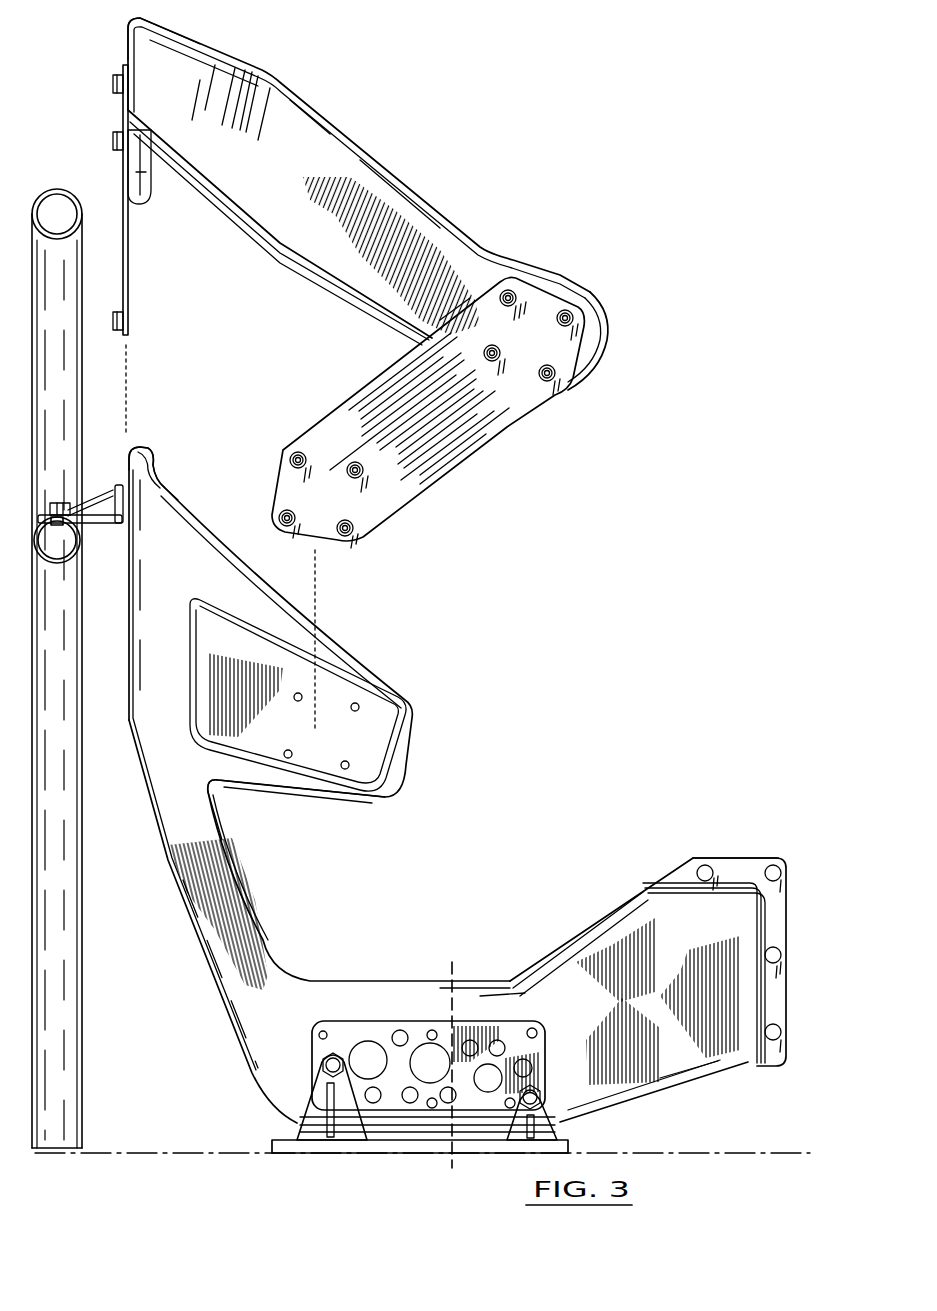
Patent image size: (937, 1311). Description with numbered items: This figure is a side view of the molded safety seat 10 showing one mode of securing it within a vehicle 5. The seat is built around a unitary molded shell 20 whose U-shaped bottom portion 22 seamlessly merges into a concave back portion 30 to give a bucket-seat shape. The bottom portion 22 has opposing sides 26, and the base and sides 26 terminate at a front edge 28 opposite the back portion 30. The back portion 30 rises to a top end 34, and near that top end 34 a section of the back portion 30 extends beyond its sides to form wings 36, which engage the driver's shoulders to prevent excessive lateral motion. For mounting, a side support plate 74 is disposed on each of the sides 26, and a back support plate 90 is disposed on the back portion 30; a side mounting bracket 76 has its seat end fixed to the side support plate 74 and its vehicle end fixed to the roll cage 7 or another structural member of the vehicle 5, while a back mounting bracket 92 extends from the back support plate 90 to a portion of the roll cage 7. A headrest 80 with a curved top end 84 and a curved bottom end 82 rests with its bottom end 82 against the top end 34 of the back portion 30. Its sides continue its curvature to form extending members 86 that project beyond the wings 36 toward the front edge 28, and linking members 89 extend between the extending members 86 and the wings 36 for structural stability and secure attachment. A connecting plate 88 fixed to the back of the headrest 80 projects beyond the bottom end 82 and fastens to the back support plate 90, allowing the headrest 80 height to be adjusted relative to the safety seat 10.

The vehicle 5 is at (452, 968).
The roll cage 7 is at (84, 262).
The safety seat 10 is at (566, 636).
The unitary molded shell 20 is at (311, 768).
The bottom portion 22 is at (659, 967).
The sides 26 is at (691, 932).
The front edge 28 is at (786, 1012).
The back portion 30 is at (242, 815).
The top end 34 is at (145, 446).
The wings 36 is at (229, 643).
The side support plate 74 is at (530, 1050).
The side mounting bracket 76 is at (500, 1150).
The headrest 80 is at (393, 196).
The bottom end 82 is at (170, 166).
The top end 84 is at (150, 23).
The extending members 86 is at (597, 345).
The connecting plate 88 is at (122, 112).
The linking members 89 is at (468, 440).
The back support plate 90 is at (128, 286).
The back mounting bracket 92 is at (90, 500).